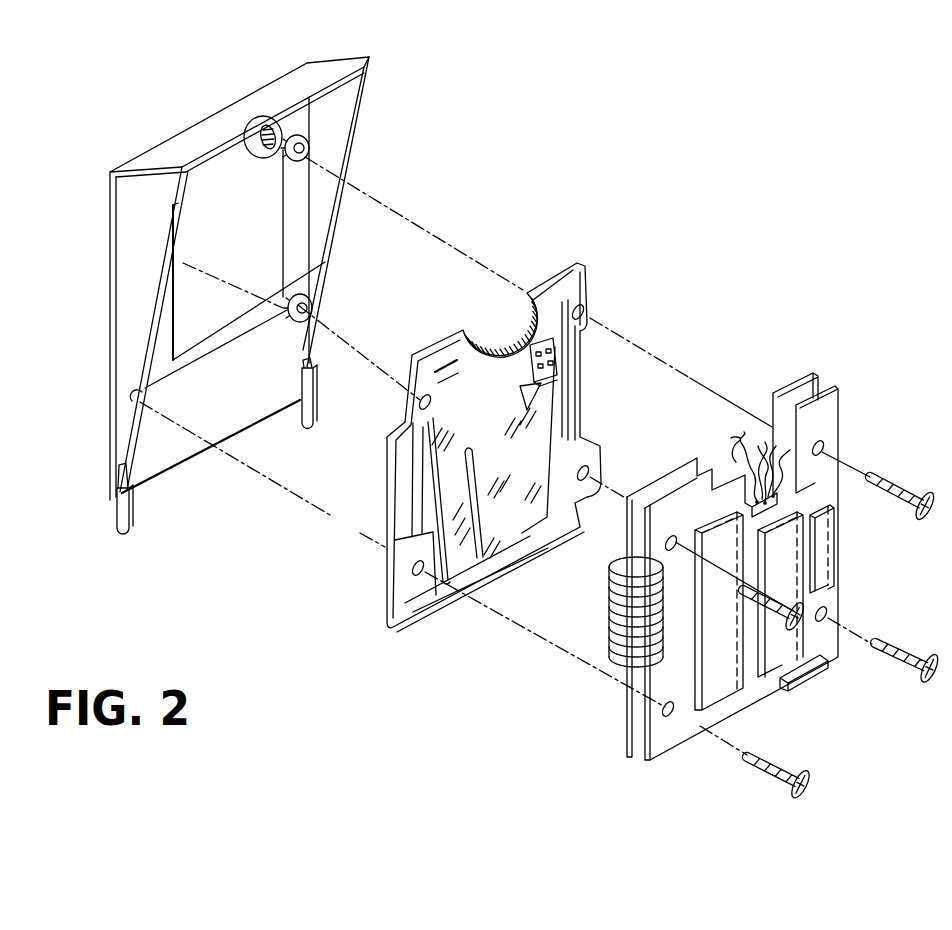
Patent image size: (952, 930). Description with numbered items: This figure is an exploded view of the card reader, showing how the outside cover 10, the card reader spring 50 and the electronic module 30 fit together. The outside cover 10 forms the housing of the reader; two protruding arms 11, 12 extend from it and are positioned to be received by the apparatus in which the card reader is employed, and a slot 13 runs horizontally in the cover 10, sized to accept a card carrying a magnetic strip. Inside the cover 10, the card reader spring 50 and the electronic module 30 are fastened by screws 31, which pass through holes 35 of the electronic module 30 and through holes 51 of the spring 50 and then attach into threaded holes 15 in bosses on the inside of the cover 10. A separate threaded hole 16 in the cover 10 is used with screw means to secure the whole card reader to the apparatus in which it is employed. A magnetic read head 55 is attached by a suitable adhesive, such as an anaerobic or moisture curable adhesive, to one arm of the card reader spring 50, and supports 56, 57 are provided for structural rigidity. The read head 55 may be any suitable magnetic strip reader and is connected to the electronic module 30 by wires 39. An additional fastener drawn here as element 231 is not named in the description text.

The outside cover 10 is at (108, 173).
The protruding arm 11 is at (122, 531).
The protruding arm 12 is at (305, 432).
The slot 13 is at (210, 219).
The threaded holes 15 is at (312, 166).
The threaded hole 16 is at (256, 152).
The electronic module 30 is at (628, 750).
The screws 31 is at (888, 491).
The holes 35 is at (820, 448).
The wires 39 is at (753, 430).
The card reader spring 50 is at (388, 627).
The holes 51 is at (423, 402).
The magnetic read head 55 is at (560, 352).
The support 56 is at (555, 379).
The support 57 is at (547, 393).
The screw 231 is at (775, 598).